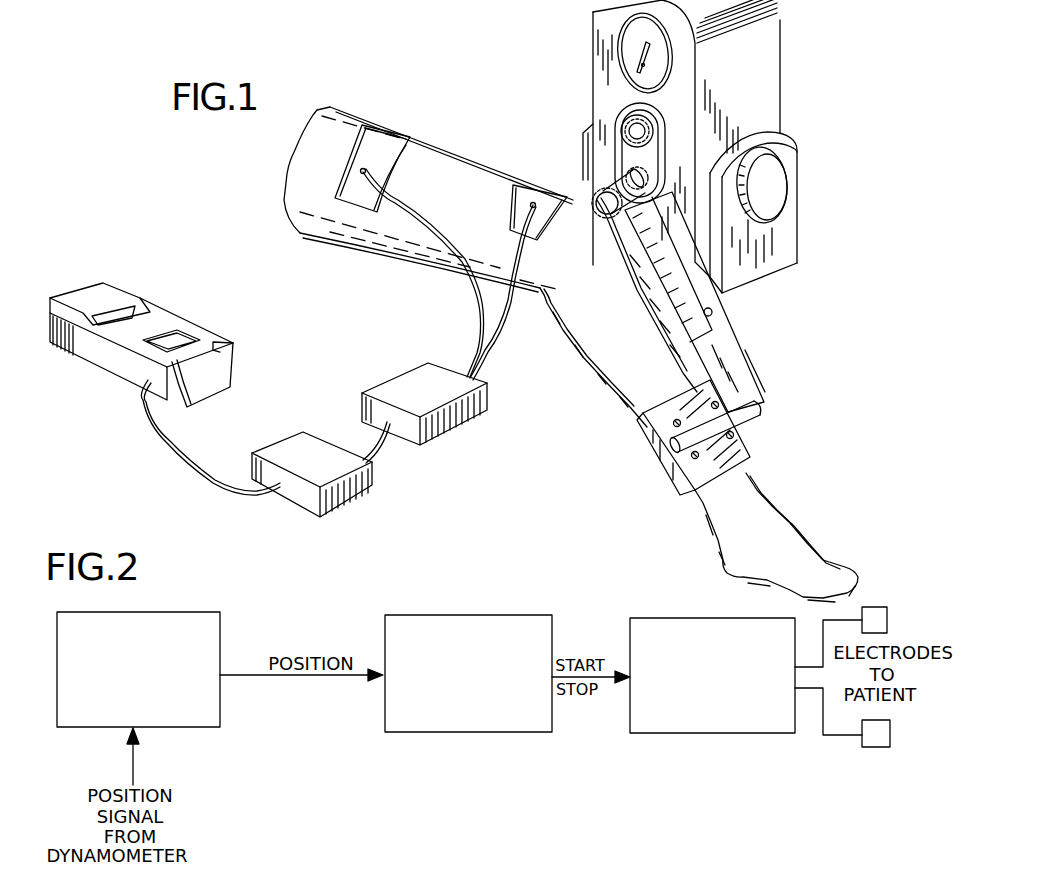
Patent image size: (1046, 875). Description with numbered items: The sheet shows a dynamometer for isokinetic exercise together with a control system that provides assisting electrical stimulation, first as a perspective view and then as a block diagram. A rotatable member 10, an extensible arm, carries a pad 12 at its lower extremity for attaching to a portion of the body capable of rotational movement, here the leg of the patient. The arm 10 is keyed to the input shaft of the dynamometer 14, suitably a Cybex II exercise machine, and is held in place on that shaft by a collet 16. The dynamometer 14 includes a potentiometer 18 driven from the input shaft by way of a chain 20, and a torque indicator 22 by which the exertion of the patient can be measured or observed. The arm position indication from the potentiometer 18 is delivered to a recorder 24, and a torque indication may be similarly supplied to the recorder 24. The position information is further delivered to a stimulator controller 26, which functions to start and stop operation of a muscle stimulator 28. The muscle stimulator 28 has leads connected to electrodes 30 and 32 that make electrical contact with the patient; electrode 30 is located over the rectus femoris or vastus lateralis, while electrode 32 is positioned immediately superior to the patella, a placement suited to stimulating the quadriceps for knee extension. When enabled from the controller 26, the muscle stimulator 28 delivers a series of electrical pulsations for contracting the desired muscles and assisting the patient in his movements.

In FIG. 1, the rotatable member 10 is at (713, 313).
In FIG. 1, the pad 12 is at (657, 422).
In FIG. 1, the dynamometer 14 is at (767, 80).
In FIG. 1, the collet 16 is at (592, 200).
In FIG. 1, the potentiometer 18 is at (622, 123).
In FIG. 1, the chain 20 is at (607, 152).
In FIG. 1, the torque indicator 22 is at (632, 32).
In FIG. 1, the recorder 24 is at (123, 360).
In FIG. 2, the recorder 24 is at (200, 612).
In FIG. 1, the stimulator controller 26 is at (353, 493).
In FIG. 2, the stimulator controller 26 is at (492, 732).
In FIG. 1, the muscle stimulator 28 is at (463, 415).
In FIG. 2, the muscle stimulator 28 is at (700, 733).
In FIG. 1, the electrode 30 is at (387, 133).
In FIG. 2, the electrode 30 is at (887, 623).
In FIG. 1, the electrode 32 is at (533, 187).
In FIG. 2, the electrode 32 is at (877, 747).